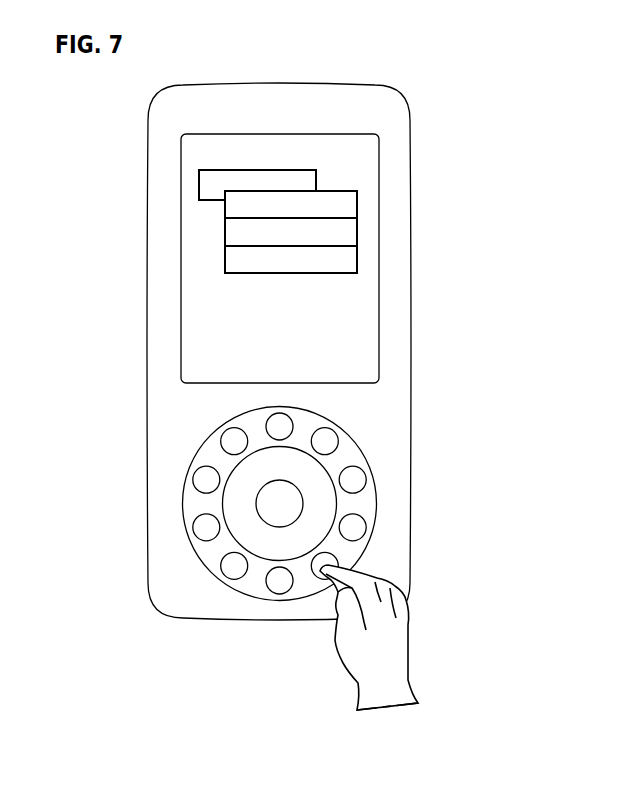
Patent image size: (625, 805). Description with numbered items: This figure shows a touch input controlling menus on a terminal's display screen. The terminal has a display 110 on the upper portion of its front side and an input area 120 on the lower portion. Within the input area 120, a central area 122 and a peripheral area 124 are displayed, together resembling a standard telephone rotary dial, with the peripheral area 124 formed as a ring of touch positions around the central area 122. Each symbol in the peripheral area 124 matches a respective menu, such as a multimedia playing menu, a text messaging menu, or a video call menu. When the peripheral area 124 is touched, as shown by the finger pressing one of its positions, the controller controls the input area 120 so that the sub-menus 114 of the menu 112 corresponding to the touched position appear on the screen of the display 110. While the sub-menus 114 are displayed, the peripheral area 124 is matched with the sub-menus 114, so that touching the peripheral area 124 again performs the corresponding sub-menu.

The display 110 is at (379, 257).
The menu 112 is at (210, 182).
The sub-menus 114 is at (237, 213).
The input area 120 is at (378, 490).
The central area 122 is at (256, 503).
The peripheral area 124 is at (210, 553).